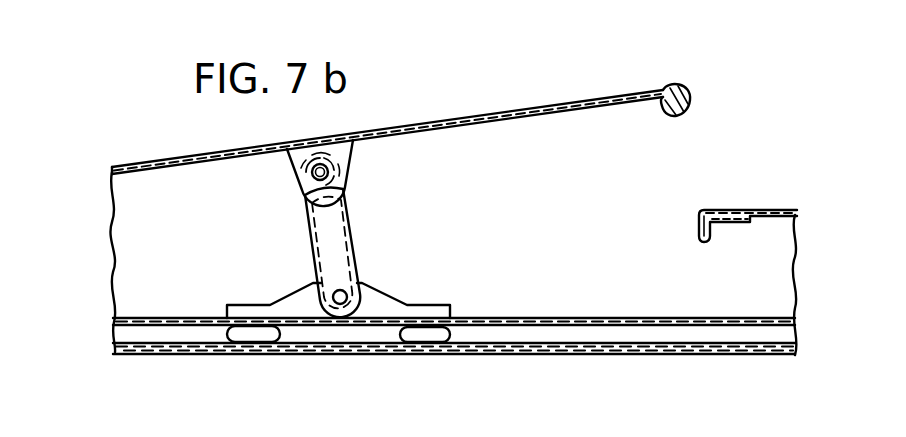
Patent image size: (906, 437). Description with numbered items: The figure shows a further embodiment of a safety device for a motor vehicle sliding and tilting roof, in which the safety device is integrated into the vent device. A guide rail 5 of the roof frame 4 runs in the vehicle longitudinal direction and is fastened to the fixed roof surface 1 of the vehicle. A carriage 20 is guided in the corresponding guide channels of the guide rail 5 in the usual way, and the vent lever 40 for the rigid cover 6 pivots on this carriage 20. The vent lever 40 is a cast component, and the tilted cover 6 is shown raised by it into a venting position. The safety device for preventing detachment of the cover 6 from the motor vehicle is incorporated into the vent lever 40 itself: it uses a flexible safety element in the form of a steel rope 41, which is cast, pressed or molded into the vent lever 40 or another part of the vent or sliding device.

The cover 6 is at (565, 103).
The fixed roof surface 1 is at (762, 209).
The steel rope 41 is at (341, 186).
The vent lever 40 is at (334, 253).
The carriage 20 is at (372, 303).
The roof frame 4 is at (490, 356).
The guide rail 5 is at (582, 333).